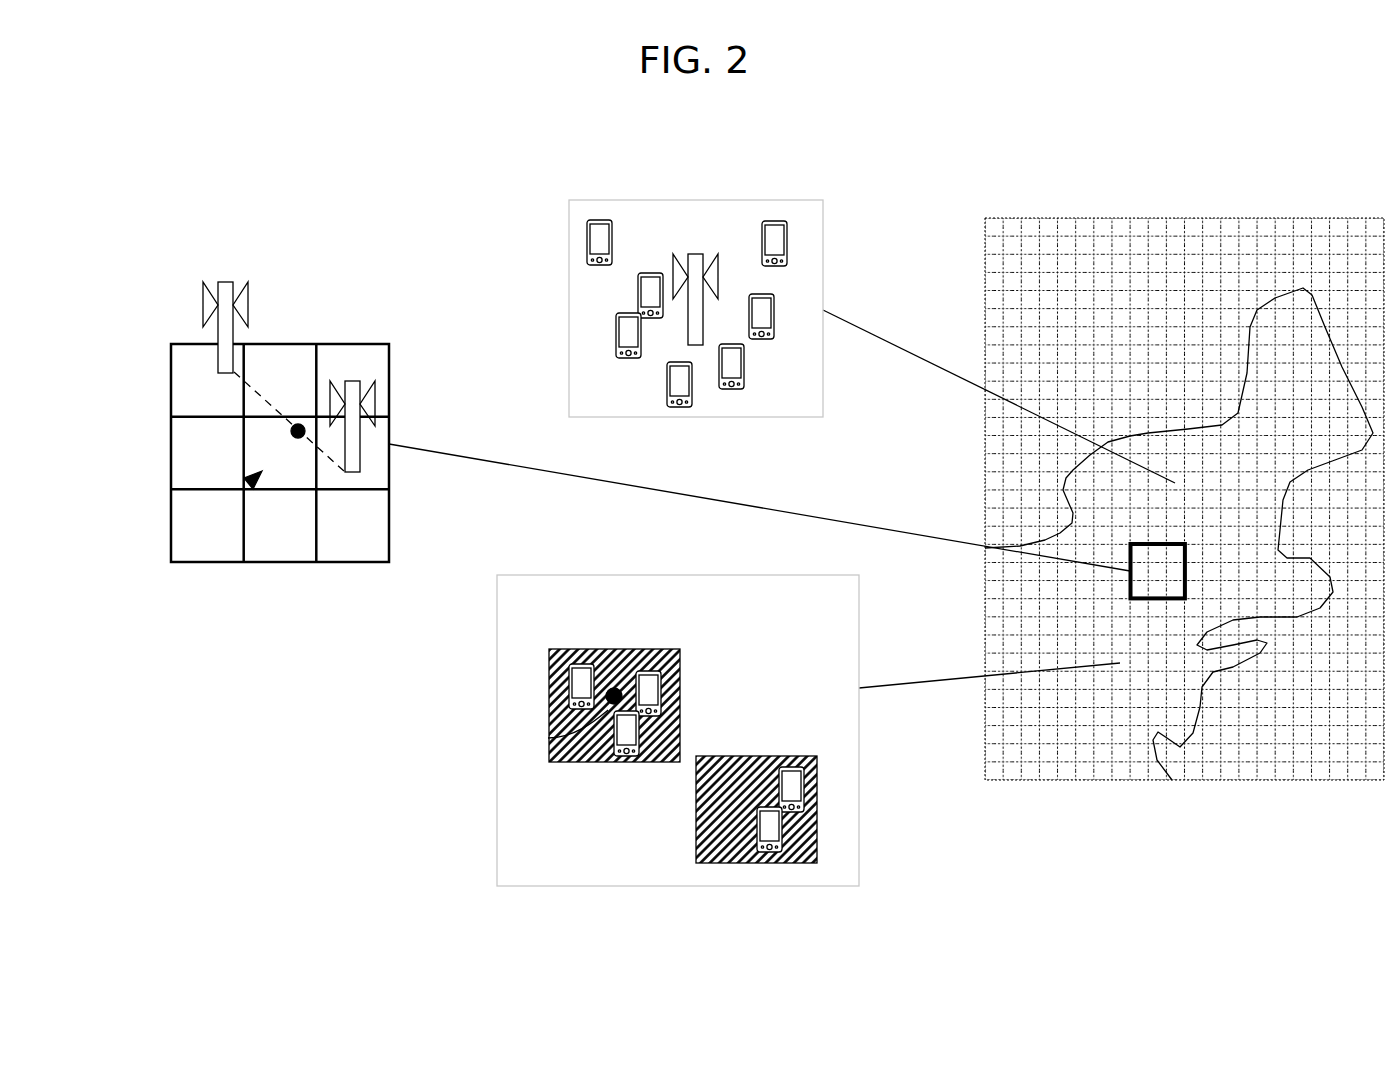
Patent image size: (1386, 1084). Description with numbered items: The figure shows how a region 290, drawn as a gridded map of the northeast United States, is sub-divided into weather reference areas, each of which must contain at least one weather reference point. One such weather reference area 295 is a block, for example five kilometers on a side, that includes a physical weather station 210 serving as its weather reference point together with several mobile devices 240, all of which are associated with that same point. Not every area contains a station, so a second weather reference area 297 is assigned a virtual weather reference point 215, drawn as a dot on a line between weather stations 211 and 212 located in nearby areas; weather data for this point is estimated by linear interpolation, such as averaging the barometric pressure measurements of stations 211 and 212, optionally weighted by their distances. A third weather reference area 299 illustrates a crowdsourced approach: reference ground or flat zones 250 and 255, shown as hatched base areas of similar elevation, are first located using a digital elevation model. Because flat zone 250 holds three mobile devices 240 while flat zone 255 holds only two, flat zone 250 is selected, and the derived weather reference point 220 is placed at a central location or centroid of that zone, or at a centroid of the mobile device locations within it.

The weather station 210 is at (698, 253).
The weather station 211 is at (355, 381).
The weather station 212 is at (221, 282).
The weather reference point 215 is at (300, 440).
The weather reference point 220 is at (548, 738).
The mobile devices 240 is at (638, 285).
The flat zone 250 is at (640, 649).
The flat zone 255 is at (683, 862).
The region 290 is at (1055, 218).
The weather reference area 295 is at (602, 200).
The weather reference area 297 is at (247, 484).
The weather reference area 299 is at (716, 886).